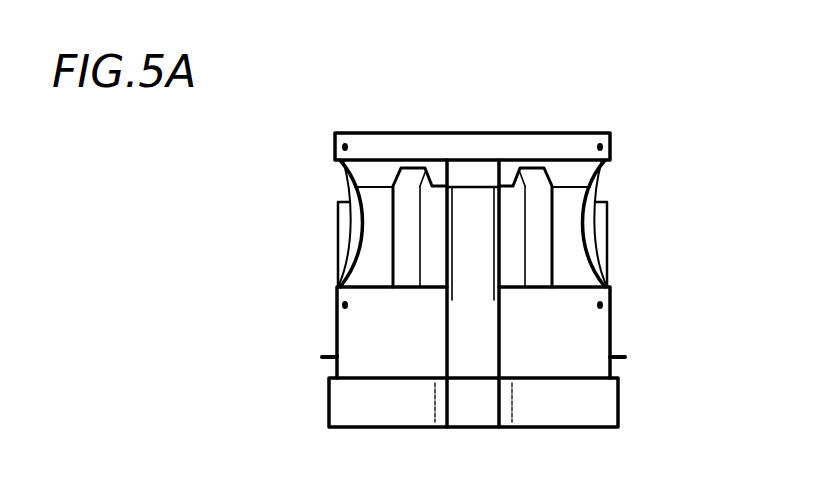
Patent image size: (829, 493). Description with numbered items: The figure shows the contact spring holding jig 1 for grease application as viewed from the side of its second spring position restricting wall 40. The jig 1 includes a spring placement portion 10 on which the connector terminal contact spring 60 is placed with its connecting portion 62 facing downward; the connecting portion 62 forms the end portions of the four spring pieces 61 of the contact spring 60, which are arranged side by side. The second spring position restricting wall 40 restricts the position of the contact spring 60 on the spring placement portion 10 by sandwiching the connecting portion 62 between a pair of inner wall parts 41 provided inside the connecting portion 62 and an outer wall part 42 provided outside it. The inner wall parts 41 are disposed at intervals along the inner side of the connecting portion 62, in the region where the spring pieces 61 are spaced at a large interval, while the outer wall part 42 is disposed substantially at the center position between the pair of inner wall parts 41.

The contact spring holding jig for grease application 1 is at (316, 403).
The spring placement portion 10 is at (620, 398).
The second spring position restricting wall 40 is at (510, 328).
The inner wall part 41 is at (420, 156).
The outer wall part 42 is at (473, 176).
The connector terminal contact spring 60 is at (452, 128).
The spring piece 61 is at (338, 187).
The connecting portion 62 is at (336, 325).